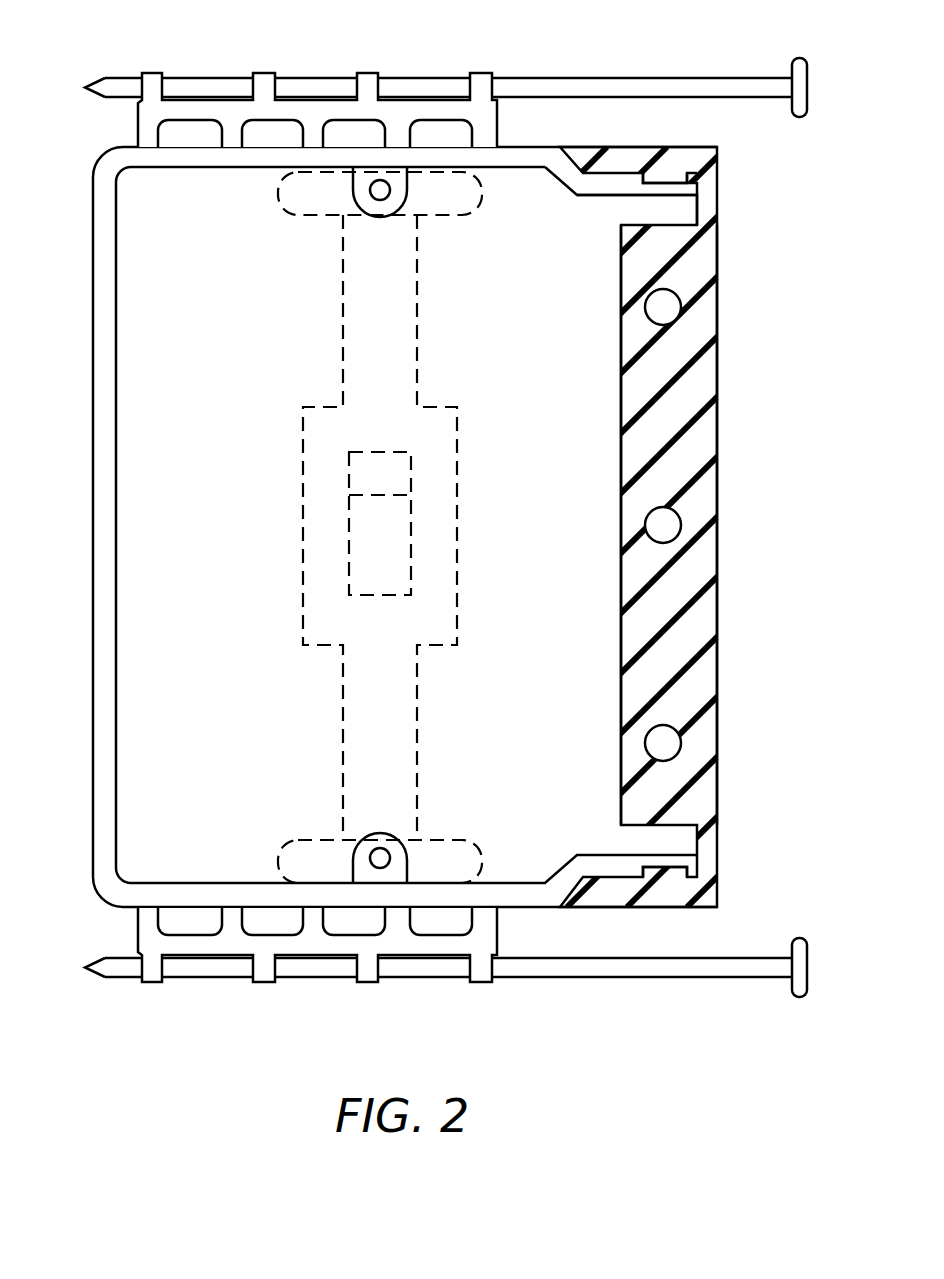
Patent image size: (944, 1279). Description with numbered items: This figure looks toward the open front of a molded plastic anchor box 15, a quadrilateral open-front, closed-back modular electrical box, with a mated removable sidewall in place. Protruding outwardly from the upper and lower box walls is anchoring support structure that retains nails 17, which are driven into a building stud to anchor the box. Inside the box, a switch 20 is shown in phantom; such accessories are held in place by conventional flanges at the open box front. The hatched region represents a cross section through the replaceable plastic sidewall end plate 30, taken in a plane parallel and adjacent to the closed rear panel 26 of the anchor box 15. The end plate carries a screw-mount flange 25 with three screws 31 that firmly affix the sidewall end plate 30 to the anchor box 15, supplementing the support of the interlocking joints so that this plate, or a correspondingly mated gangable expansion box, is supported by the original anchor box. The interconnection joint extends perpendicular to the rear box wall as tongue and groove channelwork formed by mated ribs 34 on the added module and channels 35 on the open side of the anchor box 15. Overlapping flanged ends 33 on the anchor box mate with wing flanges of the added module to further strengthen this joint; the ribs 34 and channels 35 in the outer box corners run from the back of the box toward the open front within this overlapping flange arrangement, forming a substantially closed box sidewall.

The anchor box 15 is at (100, 602).
The nails 17 is at (652, 80).
The switch 20 is at (340, 322).
The flange 25 is at (710, 483).
The rear closed panel 26 is at (158, 798).
The sidewall end plate 30 is at (724, 183).
The screws 31 is at (663, 743).
The flanged ends 33 is at (596, 855).
The ribs 34 is at (633, 205).
The channels 35 is at (665, 178).